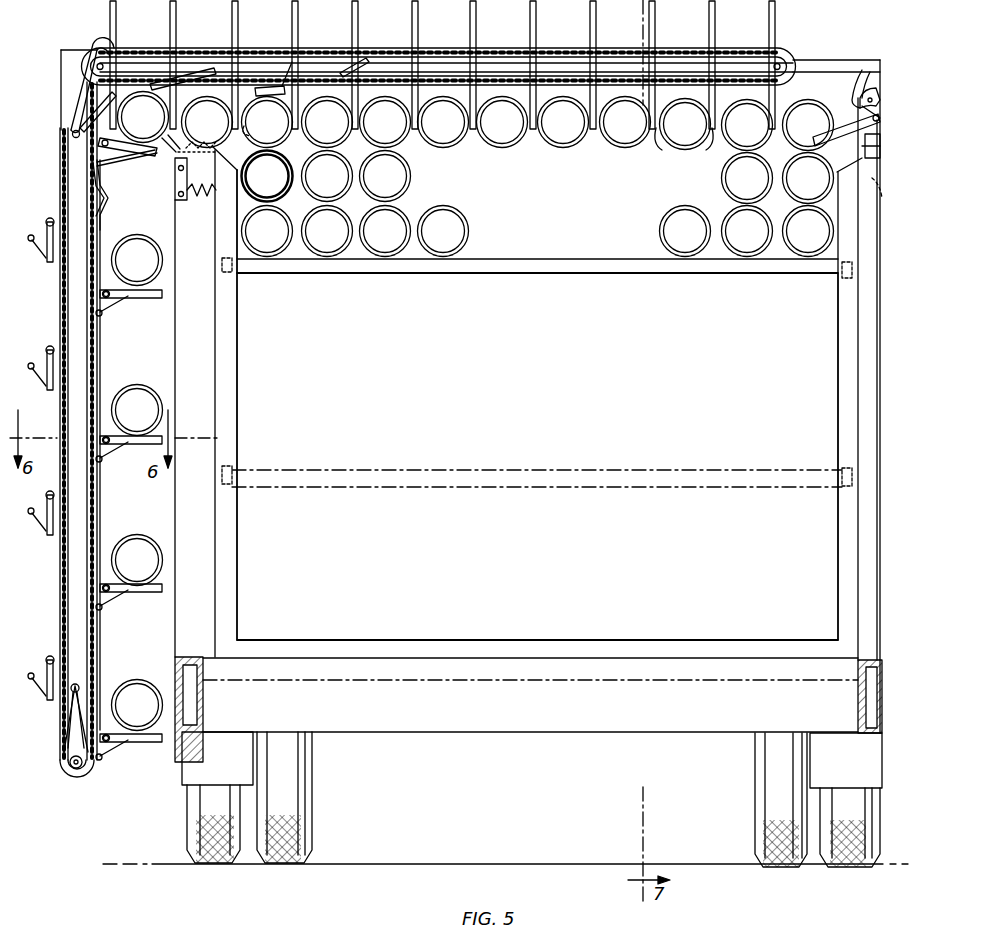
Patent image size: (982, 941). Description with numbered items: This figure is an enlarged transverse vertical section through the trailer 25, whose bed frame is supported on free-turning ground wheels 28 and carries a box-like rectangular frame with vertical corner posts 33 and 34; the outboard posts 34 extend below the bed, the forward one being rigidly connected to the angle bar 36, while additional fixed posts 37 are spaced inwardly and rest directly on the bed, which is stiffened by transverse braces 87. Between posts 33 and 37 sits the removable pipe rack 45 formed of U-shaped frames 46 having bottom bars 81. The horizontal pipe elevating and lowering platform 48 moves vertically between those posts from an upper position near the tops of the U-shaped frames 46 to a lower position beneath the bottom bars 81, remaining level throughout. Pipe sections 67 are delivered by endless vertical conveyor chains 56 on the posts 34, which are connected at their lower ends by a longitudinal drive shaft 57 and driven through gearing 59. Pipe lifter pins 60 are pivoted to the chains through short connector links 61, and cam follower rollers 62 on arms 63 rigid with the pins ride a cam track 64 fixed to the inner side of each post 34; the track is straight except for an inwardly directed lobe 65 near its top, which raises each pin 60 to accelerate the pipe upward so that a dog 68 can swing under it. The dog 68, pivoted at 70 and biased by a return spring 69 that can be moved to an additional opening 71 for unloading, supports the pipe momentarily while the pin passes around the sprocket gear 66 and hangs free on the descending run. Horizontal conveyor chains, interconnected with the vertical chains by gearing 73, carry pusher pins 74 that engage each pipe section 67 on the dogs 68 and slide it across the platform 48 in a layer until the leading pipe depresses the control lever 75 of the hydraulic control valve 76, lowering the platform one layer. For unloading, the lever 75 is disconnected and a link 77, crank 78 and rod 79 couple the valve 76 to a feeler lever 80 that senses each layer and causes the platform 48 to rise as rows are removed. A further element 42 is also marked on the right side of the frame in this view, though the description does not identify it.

The trailer 25 is at (472, 738).
The ground wheels 28 is at (278, 832).
The corner posts 33 is at (872, 378).
The corner posts 34 is at (64, 102).
The angle bar 36 is at (186, 764).
The fixed posts 37 is at (208, 519).
The cam 42 is at (877, 192).
The pipe rack 45 is at (388, 664).
The U-shaped frames 46 is at (846, 545).
The pipe elevating and lowering platform 48 is at (614, 280).
The vertical conveyor chains 56 is at (58, 619).
The drive shaft 57 is at (60, 772).
The gearing 59 is at (60, 728).
The pipe lifter pins 60 is at (133, 132).
The connector links 61 is at (52, 216).
The cam follower rollers 62 is at (36, 224).
The arms 63 is at (44, 246).
The cam track 64 is at (98, 368).
The lobe 65 is at (98, 198).
The sprocket gear 66 is at (58, 148).
The pipe section 67 is at (143, 92).
The dog 68 is at (181, 136).
The return springs 69 is at (207, 200).
The pivots 70 is at (176, 192).
The additional openings 71 is at (246, 132).
The gearing 73 is at (72, 80).
The pusher pins 74 is at (230, 72).
The control lever 75 is at (842, 128).
The hydraulic control valve 76 is at (864, 146).
The link 77 is at (868, 62).
The crank 78 is at (866, 68).
The rod 79 is at (552, 52).
The feeler lever 80 is at (276, 76).
The bottom bars 81 is at (548, 646).
The transverse braces 87 is at (602, 732).